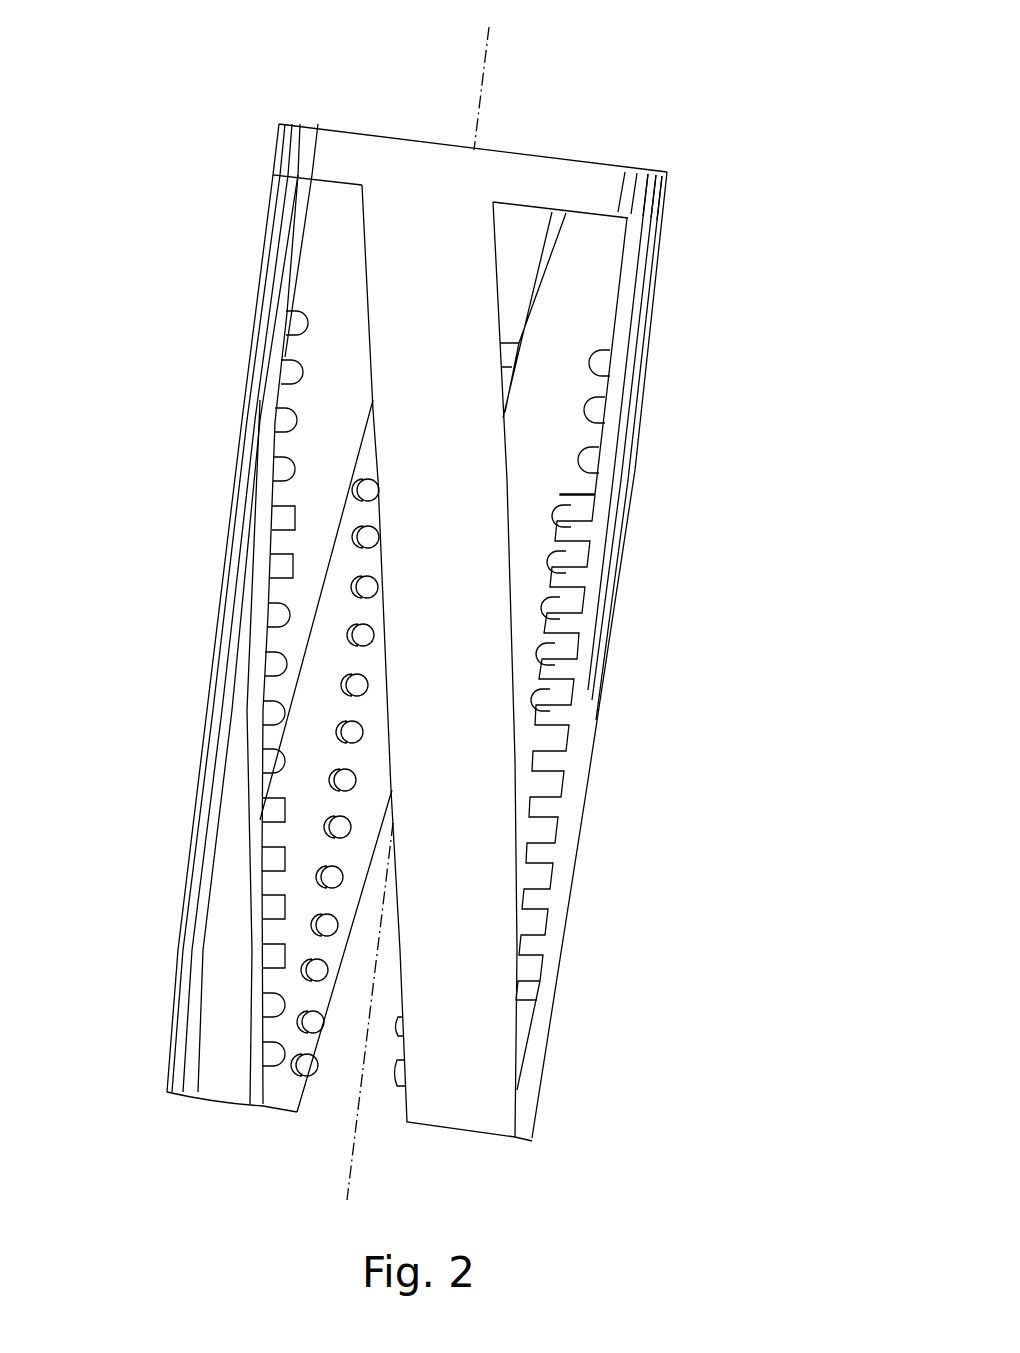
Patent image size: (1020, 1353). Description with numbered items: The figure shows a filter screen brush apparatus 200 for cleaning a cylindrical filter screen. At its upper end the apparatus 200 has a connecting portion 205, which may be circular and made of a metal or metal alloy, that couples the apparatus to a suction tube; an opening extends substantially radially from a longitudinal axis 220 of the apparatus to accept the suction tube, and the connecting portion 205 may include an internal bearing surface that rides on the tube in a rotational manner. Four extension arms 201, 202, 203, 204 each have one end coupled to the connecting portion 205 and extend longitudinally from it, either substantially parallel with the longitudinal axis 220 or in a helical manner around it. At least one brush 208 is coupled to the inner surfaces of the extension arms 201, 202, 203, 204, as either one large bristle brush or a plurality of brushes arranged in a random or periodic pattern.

The filter screen brush apparatus 200 is at (536, 112).
The extension arm 201 is at (640, 400).
The extension arm 202 is at (480, 983).
The extension arm 203 is at (197, 727).
The extension arm 204 is at (540, 297).
The connecting portion 205 is at (567, 187).
The brush 208 is at (590, 462).
The longitudinal axis 220 is at (477, 110).